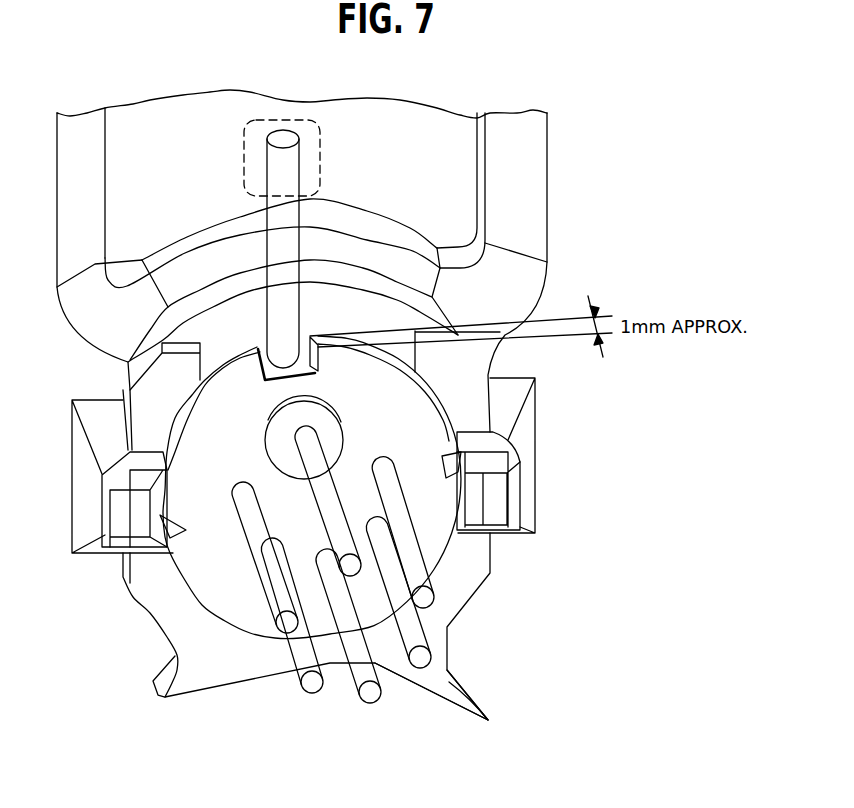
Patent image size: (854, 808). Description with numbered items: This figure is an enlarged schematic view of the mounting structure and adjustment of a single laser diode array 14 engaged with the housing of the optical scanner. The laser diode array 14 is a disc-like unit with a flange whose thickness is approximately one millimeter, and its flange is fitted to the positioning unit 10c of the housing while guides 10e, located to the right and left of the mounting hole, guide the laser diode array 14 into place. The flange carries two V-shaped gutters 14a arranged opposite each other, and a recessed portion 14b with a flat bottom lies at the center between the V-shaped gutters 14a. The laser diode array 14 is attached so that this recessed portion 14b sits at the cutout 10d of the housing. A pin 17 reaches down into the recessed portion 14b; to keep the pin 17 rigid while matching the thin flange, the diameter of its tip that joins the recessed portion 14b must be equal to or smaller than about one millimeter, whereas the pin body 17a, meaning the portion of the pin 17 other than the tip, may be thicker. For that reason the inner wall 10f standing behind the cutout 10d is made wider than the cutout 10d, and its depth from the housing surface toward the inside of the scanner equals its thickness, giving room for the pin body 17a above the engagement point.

The inner wall 10f is at (439, 162).
The cutout 10d is at (227, 320).
The positioning unit 10c is at (155, 390).
The guide 10e is at (137, 513).
The laser diode array 14 is at (433, 550).
The V-shaped gutter 14a is at (177, 527).
The recessed portion 14b is at (313, 368).
The pin 17 is at (290, 245).
The pin body 17a is at (252, 139).